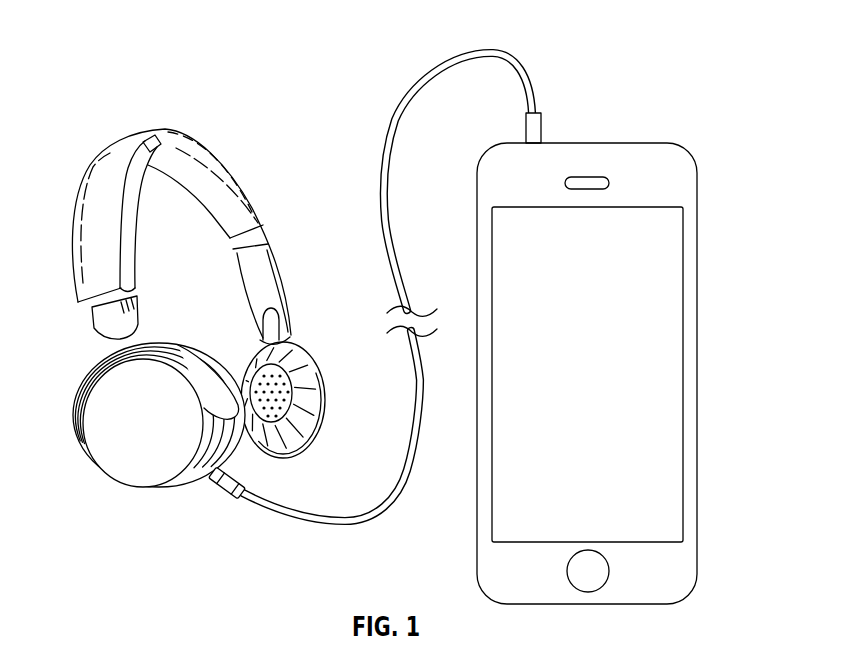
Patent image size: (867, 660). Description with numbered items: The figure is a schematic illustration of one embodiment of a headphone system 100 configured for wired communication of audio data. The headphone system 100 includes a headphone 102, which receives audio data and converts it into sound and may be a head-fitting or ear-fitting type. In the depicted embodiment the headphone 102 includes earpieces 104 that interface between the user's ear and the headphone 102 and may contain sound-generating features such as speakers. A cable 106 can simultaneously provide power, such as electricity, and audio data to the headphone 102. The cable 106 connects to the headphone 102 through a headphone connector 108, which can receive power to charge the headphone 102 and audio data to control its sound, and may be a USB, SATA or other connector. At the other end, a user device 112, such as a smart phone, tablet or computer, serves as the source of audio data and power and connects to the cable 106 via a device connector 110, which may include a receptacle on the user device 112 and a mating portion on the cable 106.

The headphone system 100 is at (686, 33).
The headphone 102 is at (166, 131).
The earpieces 104 is at (311, 437).
The cable 106 is at (375, 508).
The headphone connector 108 is at (214, 496).
The device connector 110 is at (541, 128).
The user device 112 is at (698, 360).